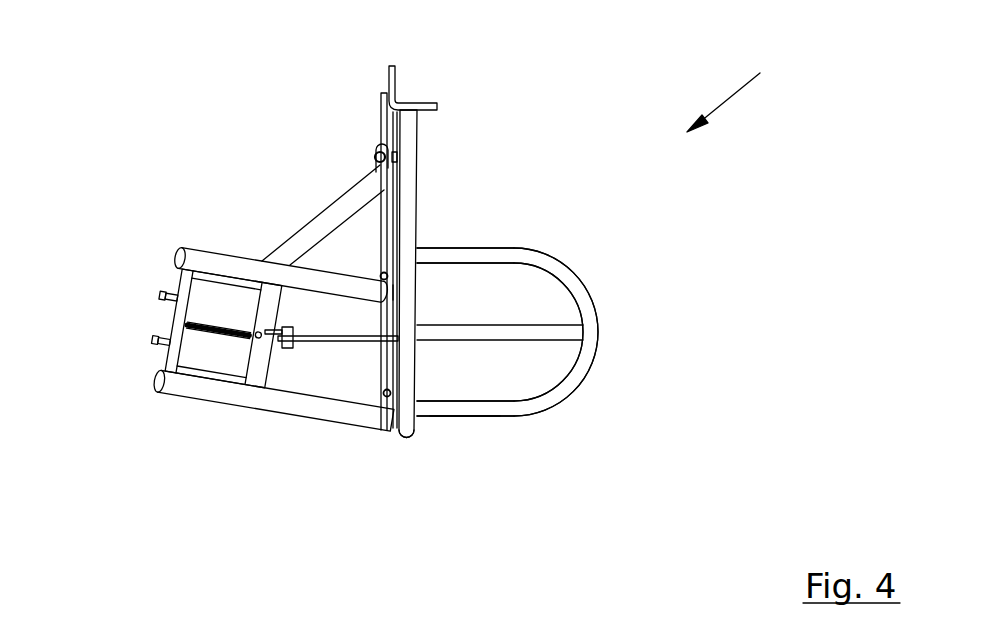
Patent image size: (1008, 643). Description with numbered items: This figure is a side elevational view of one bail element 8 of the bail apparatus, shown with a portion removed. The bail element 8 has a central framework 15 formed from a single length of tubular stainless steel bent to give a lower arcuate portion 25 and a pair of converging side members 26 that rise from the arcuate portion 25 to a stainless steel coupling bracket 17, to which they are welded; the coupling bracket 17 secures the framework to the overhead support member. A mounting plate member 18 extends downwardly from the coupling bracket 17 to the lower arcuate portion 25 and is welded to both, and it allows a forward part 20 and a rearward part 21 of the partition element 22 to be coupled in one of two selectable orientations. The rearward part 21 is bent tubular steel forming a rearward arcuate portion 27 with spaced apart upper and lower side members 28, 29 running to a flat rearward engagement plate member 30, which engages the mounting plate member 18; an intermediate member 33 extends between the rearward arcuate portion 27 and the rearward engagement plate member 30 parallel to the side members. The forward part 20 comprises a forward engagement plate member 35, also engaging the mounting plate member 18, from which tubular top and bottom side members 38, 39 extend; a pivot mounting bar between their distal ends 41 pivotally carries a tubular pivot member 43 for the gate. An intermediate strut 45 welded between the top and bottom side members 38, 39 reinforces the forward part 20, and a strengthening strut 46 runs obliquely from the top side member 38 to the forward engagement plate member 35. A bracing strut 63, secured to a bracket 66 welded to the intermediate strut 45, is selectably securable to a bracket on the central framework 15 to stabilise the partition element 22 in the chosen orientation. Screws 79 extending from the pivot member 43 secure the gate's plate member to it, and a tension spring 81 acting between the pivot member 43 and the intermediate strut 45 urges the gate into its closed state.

The bail element 8 is at (734, 89).
The central framework 15 is at (413, 173).
The coupling bracket 17 is at (395, 78).
The mounting plate member 18 is at (380, 117).
The forward part 20 is at (180, 403).
The rearward part 21 is at (507, 420).
The partition element 22 is at (555, 268).
The lower arcuate portion 25 is at (402, 437).
The side members 26 is at (412, 208).
The rearward arcuate portion 27 is at (587, 318).
The upper side member 28 is at (493, 255).
The lower side member 29 is at (468, 420).
The rearward engagement plate member 30 is at (400, 293).
The intermediate member 33 is at (477, 320).
The forward engagement plate member 35 is at (383, 238).
The top side member 38 is at (207, 251).
The bottom side member 39 is at (320, 416).
The distal ends 41 is at (175, 255).
The pivot member 43 is at (163, 357).
The intermediate strut 45 is at (263, 363).
The strengthening strut 46 is at (330, 210).
The bracing strut 63 is at (373, 343).
The bracket 66 is at (283, 332).
The screws 79 is at (162, 295).
The tension spring 81 is at (230, 327).